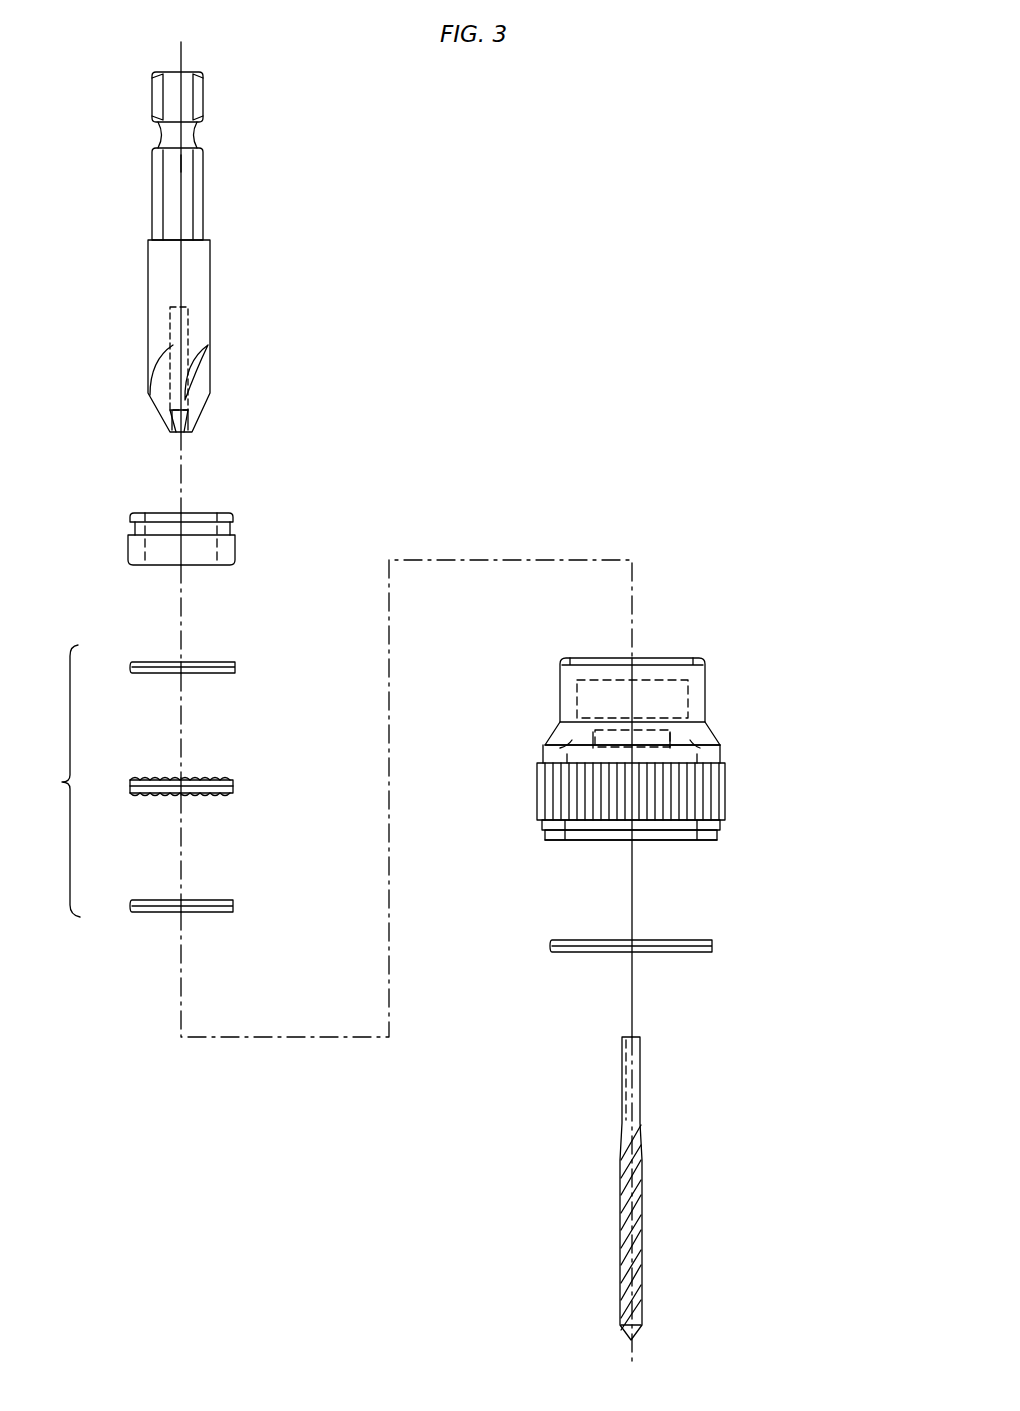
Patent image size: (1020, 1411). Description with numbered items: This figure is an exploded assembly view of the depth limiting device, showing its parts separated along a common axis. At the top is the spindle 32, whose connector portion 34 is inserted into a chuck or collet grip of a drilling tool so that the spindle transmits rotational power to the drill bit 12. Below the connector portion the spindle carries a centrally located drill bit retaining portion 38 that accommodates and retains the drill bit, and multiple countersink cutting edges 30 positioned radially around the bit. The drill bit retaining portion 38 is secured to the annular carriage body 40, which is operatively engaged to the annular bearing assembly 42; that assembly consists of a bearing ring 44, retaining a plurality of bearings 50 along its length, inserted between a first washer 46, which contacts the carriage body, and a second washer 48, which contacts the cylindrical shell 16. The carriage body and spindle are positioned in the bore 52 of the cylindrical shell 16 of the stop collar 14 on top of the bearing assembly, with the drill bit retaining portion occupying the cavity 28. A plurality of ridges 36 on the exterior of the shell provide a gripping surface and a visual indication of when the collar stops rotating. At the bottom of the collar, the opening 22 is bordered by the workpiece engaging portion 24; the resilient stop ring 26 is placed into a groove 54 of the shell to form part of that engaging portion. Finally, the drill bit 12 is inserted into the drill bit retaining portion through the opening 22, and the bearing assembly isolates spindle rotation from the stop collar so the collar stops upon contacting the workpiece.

The drill bit 12 is at (640, 1112).
The stop collar 14 is at (712, 700).
The cylindrical shell 16 is at (550, 735).
The opening 22 is at (665, 845).
The workpiece engaging portion 24 is at (703, 840).
The stop ring 26 is at (713, 945).
The cavity 28 is at (716, 740).
The countersink cutting edges 30 is at (214, 426).
The spindle 32 is at (210, 190).
The connector portion 34 is at (209, 92).
The ridges 36 is at (726, 790).
The drill bit retaining portion 38 is at (210, 300).
The carriage body 40 is at (237, 549).
The bearing assembly 42 is at (54, 781).
The bearing ring 44 is at (236, 788).
The first washer 46 is at (237, 670).
The second washer 48 is at (236, 908).
The bearings 50 is at (203, 778).
The bore 52 is at (710, 672).
The groove 54 is at (575, 843).